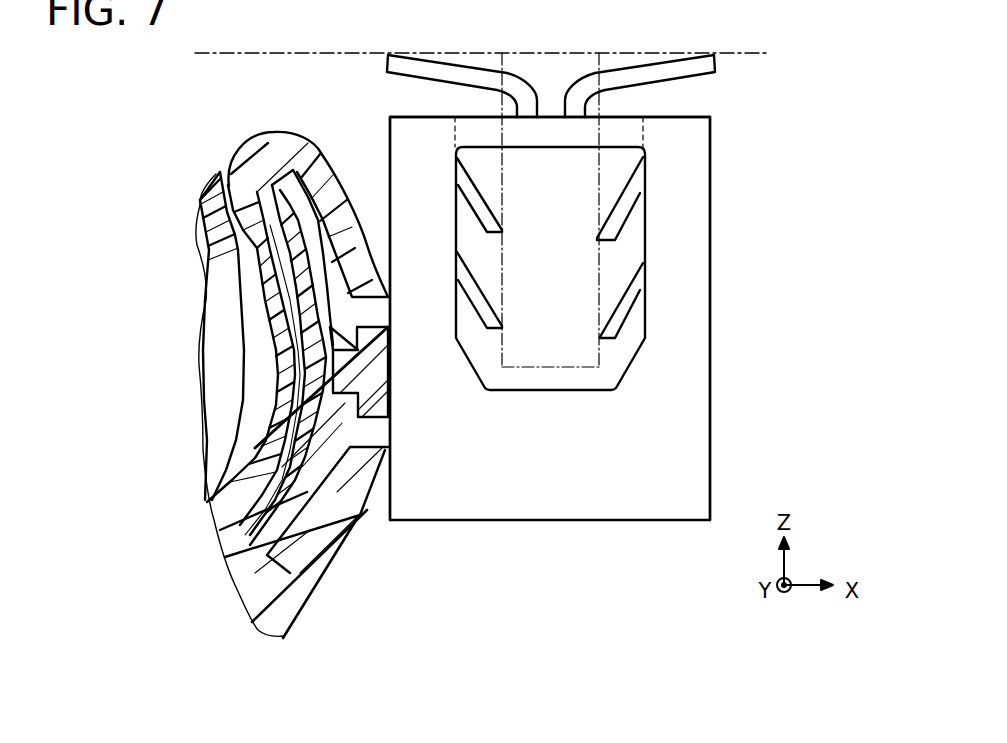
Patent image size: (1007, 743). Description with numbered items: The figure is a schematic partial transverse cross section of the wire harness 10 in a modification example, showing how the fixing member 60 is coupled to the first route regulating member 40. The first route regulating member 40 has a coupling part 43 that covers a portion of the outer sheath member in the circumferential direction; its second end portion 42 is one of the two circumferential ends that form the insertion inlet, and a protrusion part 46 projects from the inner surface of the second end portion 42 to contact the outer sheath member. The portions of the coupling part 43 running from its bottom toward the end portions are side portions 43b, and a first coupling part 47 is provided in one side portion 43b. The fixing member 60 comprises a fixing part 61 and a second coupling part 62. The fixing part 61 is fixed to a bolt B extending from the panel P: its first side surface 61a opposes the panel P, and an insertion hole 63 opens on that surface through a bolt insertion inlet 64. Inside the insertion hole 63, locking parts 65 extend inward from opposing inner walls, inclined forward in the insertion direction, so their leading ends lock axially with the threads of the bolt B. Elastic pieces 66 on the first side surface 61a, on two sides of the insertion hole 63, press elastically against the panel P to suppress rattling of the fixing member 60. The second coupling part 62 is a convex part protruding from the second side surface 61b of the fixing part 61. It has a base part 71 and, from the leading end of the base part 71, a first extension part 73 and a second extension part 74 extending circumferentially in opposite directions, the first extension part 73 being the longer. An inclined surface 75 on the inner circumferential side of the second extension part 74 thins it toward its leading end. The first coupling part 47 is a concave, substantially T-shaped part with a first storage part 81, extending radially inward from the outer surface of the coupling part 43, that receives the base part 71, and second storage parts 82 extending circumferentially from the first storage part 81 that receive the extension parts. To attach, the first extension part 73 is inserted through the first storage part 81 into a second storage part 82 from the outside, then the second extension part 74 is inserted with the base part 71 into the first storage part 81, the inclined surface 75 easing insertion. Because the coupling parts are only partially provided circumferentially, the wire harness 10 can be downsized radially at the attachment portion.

The wire harness 10 is at (741, 126).
The first route regulating member 40 is at (290, 632).
The second end portion 42 is at (268, 181).
The coupling part 43 is at (294, 372).
The side portion 43b is at (303, 597).
The protrusion part 46 is at (235, 222).
The first coupling part 47 is at (327, 252).
The fixing member 60 is at (620, 522).
The fixing part 61 is at (700, 242).
The first side surface 61a is at (476, 116).
The second side surface 61b is at (390, 140).
The second coupling part 62 is at (333, 332).
The insertion hole 63 is at (573, 391).
The bolt insertion inlet 64 is at (643, 128).
The locking part 65 is at (636, 211).
The elastic piece 66 is at (638, 63).
The base part 71 is at (378, 322).
The first extension part 73 is at (298, 252).
The second extension part 74 is at (288, 354).
The inclined surface 75 is at (295, 378).
The first storage part 81 is at (380, 298).
The second storage part 82 is at (318, 202).
The bolt B is at (527, 368).
The panel P is at (222, 56).